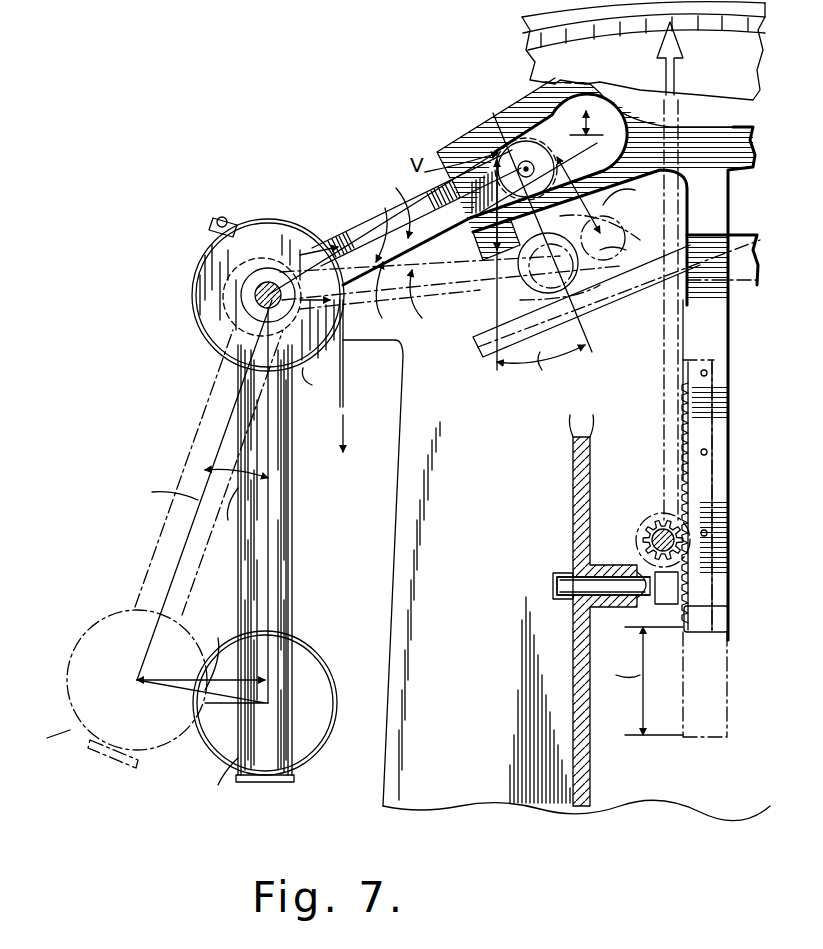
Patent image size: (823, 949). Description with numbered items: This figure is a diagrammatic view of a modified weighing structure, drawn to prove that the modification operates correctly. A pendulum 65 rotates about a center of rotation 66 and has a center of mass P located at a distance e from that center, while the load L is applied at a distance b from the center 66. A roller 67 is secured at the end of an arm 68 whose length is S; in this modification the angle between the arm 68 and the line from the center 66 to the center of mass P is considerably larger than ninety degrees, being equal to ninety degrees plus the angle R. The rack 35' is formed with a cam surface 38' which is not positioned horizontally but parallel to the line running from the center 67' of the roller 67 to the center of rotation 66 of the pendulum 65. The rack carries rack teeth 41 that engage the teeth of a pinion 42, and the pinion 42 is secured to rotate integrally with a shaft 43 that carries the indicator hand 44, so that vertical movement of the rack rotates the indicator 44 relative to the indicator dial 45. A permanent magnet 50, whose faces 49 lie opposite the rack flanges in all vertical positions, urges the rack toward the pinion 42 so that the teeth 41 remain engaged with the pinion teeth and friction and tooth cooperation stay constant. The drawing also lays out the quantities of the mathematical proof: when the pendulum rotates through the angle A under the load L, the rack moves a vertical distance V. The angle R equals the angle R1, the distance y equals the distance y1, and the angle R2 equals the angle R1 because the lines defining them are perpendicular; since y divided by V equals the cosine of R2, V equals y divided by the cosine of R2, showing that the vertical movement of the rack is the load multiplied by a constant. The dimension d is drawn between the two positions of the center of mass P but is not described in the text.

The indicator hand 44 is at (676, 74).
The indicator dial 45 is at (527, 32).
The cam surface 38' is at (550, 359).
The roller 67 is at (526, 142).
The center of roller 67' is at (527, 224).
The arm 68 is at (370, 232).
The center of rotation of the pendulum 66 is at (262, 294).
The pendulum 65 is at (294, 518).
The rack 35' is at (653, 310).
The rack teeth 41 is at (688, 480).
The pinion 42 is at (655, 522).
The shaft 43 is at (655, 538).
The permanent magnet 50 is at (605, 572).
The faces of the permanent magnet 49 is at (636, 653).
The center of mass P is at (183, 707).
The distance from center of rotation to center of mass e is at (205, 490).
The distance d is at (202, 657).
The distance of load application b is at (313, 384).
The load L is at (341, 397).
The angle of pendulum rotation A is at (295, 399).
The angle R is at (418, 302).
The length of arm S is at (393, 217).
The vertical distance moved by the rack V is at (618, 676).
The distance y is at (584, 239).
The distance y1 is at (584, 263).
The angle R1 is at (593, 125).
The angle R2 is at (541, 370).